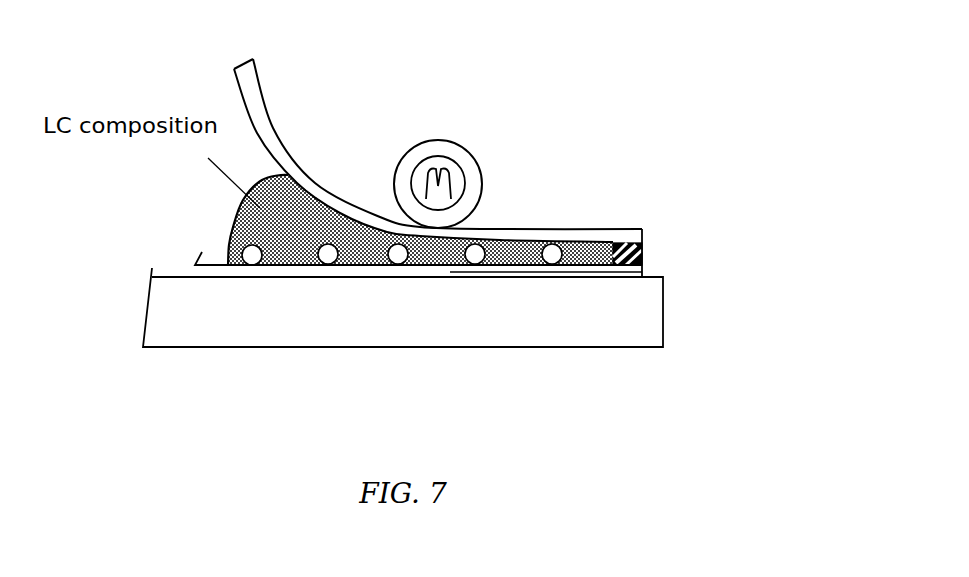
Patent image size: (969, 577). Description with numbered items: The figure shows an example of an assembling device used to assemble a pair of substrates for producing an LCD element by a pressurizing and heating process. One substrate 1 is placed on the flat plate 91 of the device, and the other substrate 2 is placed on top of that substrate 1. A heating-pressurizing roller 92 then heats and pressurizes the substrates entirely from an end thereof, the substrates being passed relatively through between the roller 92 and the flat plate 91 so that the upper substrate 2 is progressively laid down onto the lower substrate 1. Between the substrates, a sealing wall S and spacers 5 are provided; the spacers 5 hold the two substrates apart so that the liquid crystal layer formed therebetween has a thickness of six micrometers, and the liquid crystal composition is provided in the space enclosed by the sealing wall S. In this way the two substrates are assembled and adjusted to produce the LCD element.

The substrate 1 is at (217, 270).
The substrate 2 is at (255, 72).
The spacers 5 is at (480, 257).
The flat plate 91 is at (400, 322).
The heating-pressurizing roller 92 is at (438, 140).
The sealing wall S is at (642, 252).